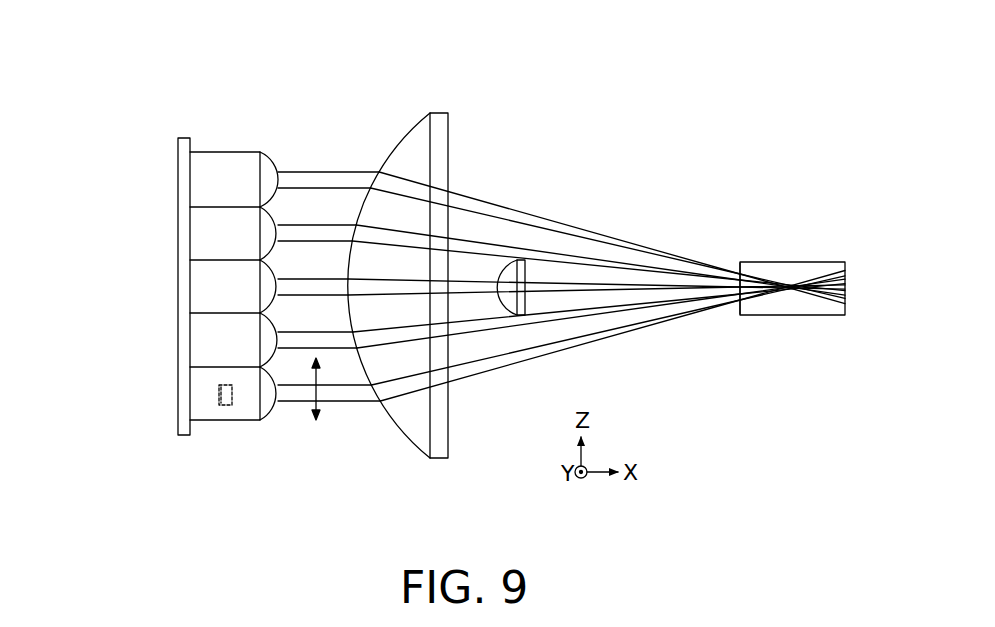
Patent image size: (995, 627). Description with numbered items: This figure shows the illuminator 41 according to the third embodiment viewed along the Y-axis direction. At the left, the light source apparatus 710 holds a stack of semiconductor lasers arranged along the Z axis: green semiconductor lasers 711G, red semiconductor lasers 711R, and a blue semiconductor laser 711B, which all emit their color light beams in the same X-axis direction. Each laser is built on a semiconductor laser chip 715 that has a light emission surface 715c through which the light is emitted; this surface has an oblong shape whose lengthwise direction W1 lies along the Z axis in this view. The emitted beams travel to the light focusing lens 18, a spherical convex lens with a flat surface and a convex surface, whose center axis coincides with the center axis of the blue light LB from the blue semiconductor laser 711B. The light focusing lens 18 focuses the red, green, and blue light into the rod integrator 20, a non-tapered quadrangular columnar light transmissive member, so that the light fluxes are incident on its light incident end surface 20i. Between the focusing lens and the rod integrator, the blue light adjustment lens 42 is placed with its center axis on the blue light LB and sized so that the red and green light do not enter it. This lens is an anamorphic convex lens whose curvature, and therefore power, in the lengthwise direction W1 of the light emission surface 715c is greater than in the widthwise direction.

The light source apparatus 710 is at (195, 118).
The green semiconductor laser 711G is at (207, 180).
The red semiconductor laser 711R is at (203, 237).
The blue semiconductor laser 711B is at (203, 290).
The semiconductor laser chip 715 is at (222, 405).
The light emission surface 715c is at (232, 395).
The blue light LB is at (305, 247).
The lengthwise direction W1 is at (332, 398).
The light focusing lens 18 is at (417, 147).
The illuminator 41 is at (495, 118).
The blue light adjustment lens 42 is at (503, 272).
The rod integrator 20 is at (768, 265).
The light incident end surface 20i is at (738, 305).